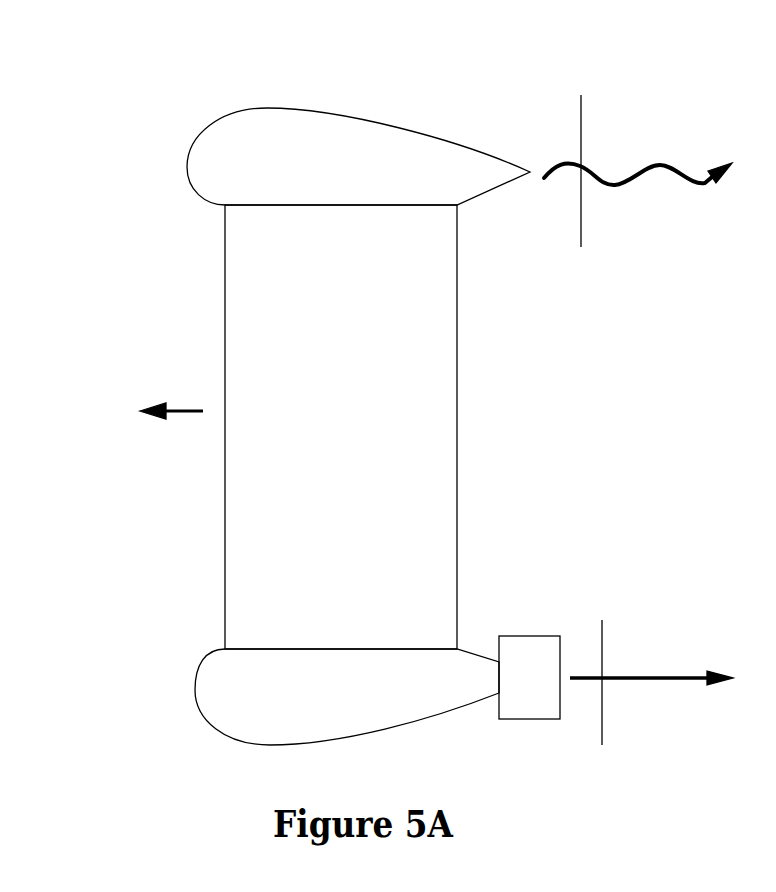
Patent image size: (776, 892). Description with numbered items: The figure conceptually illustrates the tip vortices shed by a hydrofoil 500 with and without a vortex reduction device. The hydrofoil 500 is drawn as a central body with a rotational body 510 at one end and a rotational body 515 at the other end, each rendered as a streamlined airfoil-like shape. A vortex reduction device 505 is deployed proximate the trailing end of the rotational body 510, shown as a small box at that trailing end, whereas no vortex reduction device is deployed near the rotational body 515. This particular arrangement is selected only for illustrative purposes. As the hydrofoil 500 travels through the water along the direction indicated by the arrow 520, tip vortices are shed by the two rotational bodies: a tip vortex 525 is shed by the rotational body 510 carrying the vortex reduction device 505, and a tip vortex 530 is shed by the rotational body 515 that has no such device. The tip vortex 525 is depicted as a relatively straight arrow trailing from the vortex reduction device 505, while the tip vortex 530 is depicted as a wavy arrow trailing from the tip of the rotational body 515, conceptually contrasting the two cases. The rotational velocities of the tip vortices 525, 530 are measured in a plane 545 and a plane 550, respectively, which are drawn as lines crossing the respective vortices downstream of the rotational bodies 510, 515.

The hydrofoil 500 is at (341, 427).
The vortex reduction device 505 is at (537, 719).
The rotational body 510 is at (347, 697).
The rotational body 515 is at (358, 156).
The arrow 520 is at (191, 413).
The tip vortex 525 is at (693, 676).
The tip vortex 530 is at (632, 178).
The plane 545 is at (602, 733).
The plane 550 is at (581, 121).